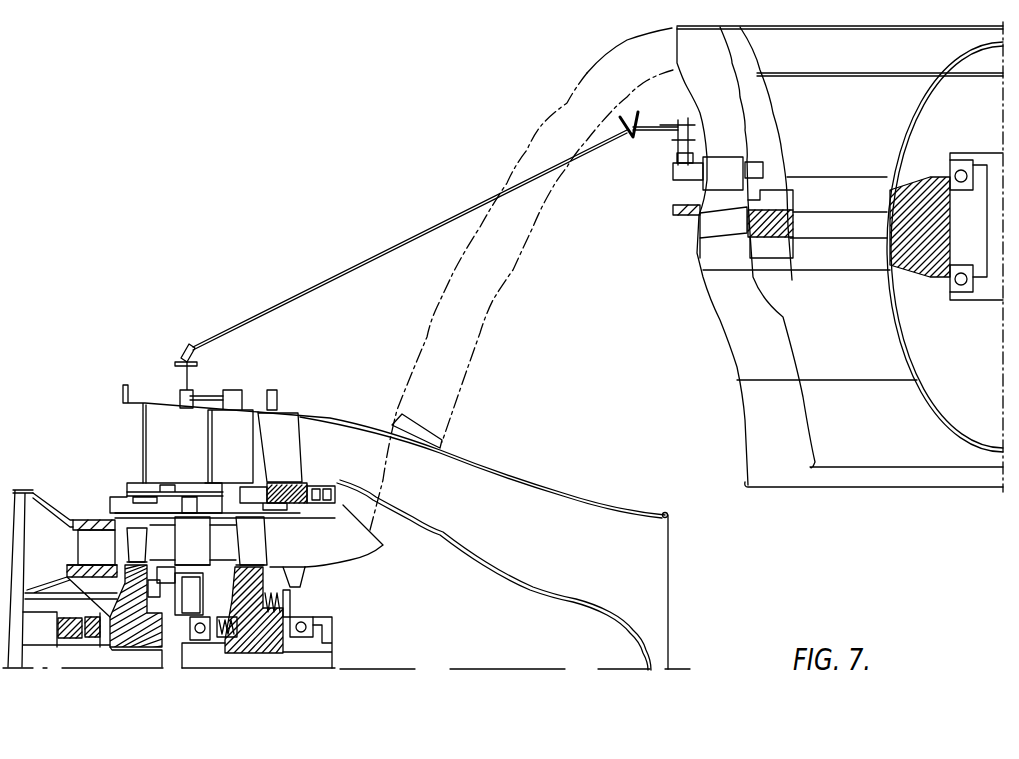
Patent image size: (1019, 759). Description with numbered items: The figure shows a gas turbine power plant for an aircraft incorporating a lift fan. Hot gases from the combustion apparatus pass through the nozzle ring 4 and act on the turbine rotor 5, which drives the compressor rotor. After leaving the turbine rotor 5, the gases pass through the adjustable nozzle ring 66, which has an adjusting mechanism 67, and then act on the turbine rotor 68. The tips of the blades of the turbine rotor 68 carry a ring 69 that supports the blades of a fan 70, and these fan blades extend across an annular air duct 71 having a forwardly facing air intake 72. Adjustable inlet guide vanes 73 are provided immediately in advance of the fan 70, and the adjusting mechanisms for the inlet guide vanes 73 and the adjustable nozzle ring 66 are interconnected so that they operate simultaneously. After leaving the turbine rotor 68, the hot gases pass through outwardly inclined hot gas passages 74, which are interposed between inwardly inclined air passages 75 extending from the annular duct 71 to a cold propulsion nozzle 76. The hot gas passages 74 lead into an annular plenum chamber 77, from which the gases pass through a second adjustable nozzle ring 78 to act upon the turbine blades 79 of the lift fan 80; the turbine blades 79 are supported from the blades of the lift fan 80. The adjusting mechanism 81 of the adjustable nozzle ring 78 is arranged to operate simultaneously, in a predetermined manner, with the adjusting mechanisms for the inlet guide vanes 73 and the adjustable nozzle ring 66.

The nozzle ring 4 is at (89, 561).
The turbine rotor 5 is at (143, 561).
The adjustable nozzle ring 66 is at (182, 559).
The adjusting mechanism 67 is at (183, 488).
The turbine rotor 68 is at (240, 559).
The ring 69 is at (280, 506).
The fan 70 is at (273, 471).
The annular air duct 71 is at (265, 431).
The air intake 72 is at (89, 454).
The adjustable inlet guide vanes 73 is at (224, 471).
The hot gas passages 74 is at (322, 557).
The air passages 75 is at (474, 524).
The cold propulsion nozzle 76 is at (668, 565).
The annular plenum chamber 77 is at (703, 87).
The adjustable nozzle ring 78 is at (712, 189).
The turbine blades 79 is at (716, 236).
The lift fan 80 is at (832, 241).
The adjusting mechanism 81 is at (672, 148).